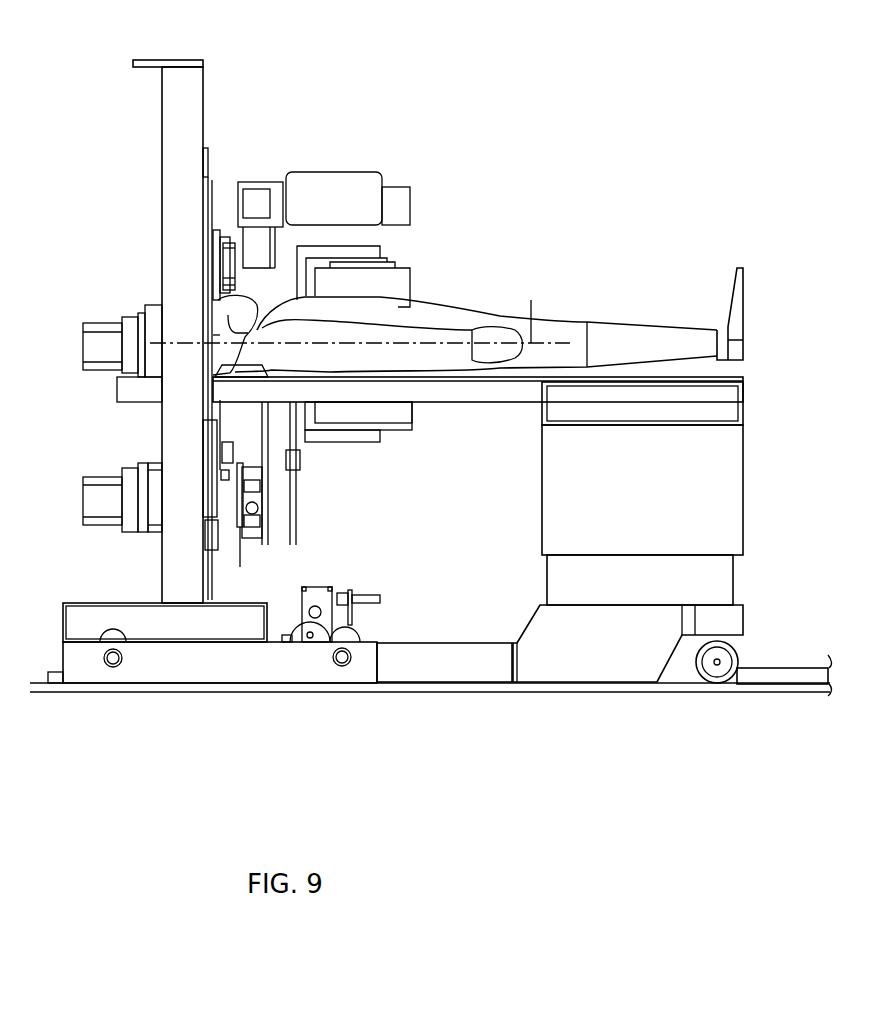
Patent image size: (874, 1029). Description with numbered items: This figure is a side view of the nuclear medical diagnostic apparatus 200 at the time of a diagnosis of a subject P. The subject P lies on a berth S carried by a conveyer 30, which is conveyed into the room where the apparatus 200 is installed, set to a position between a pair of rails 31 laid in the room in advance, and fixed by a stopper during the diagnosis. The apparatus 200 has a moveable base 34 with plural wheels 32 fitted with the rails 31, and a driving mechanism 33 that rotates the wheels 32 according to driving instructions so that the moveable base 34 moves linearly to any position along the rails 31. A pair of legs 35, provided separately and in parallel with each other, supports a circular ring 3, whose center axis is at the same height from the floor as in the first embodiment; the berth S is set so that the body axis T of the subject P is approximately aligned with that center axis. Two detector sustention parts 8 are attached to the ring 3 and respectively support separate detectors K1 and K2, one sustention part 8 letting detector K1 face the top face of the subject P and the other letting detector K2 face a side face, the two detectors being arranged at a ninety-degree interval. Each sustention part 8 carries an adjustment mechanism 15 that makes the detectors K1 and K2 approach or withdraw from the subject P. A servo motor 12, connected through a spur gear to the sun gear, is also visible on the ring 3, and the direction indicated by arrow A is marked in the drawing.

The nuclear medical diagnostic apparatus 200 is at (322, 776).
The legs 35 is at (162, 123).
The irradiation direction A is at (221, 68).
The ring 3 is at (208, 150).
The adjustment mechanism 15 is at (223, 210).
The detector sustention part 8 is at (349, 315).
The detector K1 is at (410, 208).
The detector K2 is at (410, 284).
The servo motor 12 is at (97, 322).
The berth S is at (494, 402).
The conveyer 30 is at (740, 657).
The rails 31 is at (805, 668).
The moveable base 34 is at (145, 603).
The wheels 32 is at (112, 628).
The driving mechanism 33 is at (323, 587).
The subject P is at (556, 318).
The body axis T is at (530, 309).